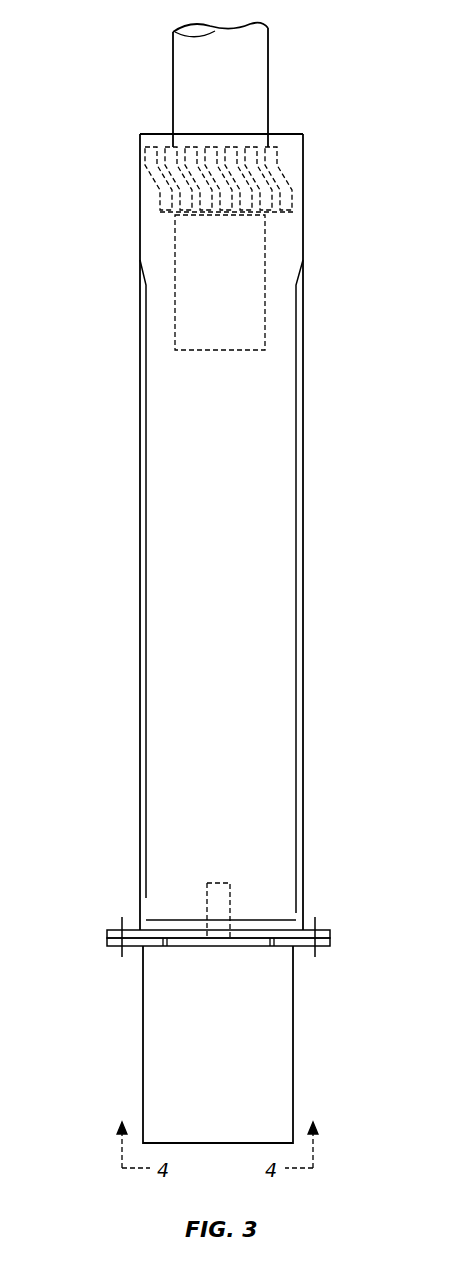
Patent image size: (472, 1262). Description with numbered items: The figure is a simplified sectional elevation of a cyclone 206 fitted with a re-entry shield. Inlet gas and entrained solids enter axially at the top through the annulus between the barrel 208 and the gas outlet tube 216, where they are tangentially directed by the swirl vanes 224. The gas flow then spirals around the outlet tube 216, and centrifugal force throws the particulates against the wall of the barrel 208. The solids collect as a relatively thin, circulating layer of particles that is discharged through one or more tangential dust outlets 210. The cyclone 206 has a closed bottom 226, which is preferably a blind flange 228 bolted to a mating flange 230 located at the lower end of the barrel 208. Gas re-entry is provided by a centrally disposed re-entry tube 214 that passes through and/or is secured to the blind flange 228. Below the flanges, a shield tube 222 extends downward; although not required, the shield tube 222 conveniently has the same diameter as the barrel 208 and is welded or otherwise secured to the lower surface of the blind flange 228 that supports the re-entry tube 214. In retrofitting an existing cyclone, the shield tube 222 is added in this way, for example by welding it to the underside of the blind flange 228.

The cyclone 206 is at (127, 328).
The barrel 208 is at (303, 543).
The tangential dust outlet 210 is at (137, 898).
The re-entry tube 214 is at (223, 883).
The gas outlet tube 216 is at (268, 77).
The shield tube 222 is at (293, 1062).
The swirl vanes 224 is at (277, 187).
The closed bottom 226 is at (260, 937).
The blind flange 228 is at (250, 947).
The mating flange 230 is at (330, 932).